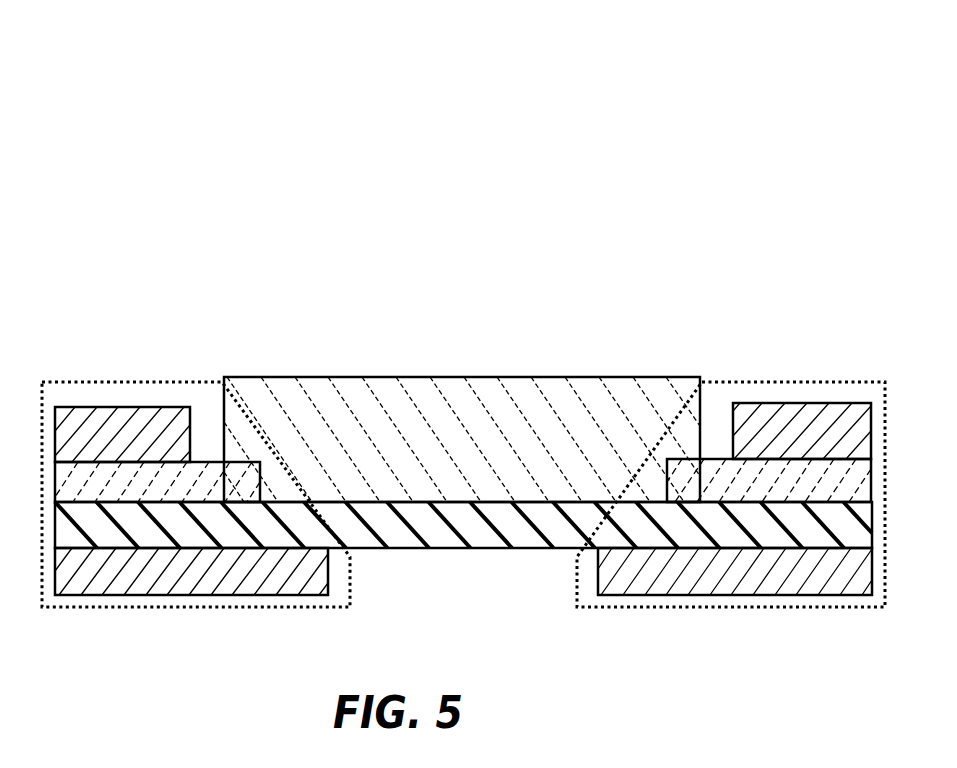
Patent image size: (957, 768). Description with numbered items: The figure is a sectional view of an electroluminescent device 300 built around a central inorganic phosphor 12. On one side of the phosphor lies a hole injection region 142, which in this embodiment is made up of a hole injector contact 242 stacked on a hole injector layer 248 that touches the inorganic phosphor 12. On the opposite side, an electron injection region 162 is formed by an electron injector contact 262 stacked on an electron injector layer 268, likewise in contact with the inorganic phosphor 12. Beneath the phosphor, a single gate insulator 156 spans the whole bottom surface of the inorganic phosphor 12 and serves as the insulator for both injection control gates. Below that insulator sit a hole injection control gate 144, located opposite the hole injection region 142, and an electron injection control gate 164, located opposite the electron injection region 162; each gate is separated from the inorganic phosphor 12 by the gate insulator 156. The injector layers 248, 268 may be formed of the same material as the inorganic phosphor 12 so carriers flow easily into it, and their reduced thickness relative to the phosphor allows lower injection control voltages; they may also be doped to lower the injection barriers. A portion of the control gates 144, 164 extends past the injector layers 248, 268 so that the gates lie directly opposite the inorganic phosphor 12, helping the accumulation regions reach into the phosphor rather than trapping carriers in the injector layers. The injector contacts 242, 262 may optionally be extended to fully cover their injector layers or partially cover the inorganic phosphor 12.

The electroluminescent device 300 is at (133, 112).
The inorganic phosphor 12 is at (540, 377).
The gate insulator 156 is at (473, 548).
The hole injection region 142 is at (147, 607).
The hole injection control gate 144 is at (260, 595).
The electron injection region 162 is at (657, 605).
The electron injection control gate 164 is at (850, 595).
The hole injector contact 242 is at (123, 407).
The hole injector layer 248 is at (212, 460).
The electron injector contact 262 is at (793, 402).
The electron injector layer 268 is at (712, 458).